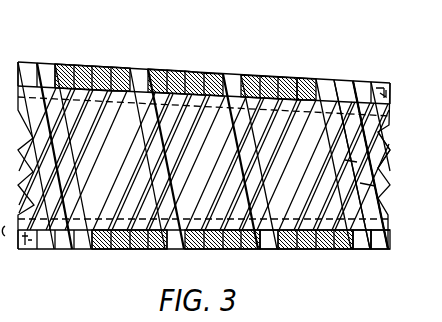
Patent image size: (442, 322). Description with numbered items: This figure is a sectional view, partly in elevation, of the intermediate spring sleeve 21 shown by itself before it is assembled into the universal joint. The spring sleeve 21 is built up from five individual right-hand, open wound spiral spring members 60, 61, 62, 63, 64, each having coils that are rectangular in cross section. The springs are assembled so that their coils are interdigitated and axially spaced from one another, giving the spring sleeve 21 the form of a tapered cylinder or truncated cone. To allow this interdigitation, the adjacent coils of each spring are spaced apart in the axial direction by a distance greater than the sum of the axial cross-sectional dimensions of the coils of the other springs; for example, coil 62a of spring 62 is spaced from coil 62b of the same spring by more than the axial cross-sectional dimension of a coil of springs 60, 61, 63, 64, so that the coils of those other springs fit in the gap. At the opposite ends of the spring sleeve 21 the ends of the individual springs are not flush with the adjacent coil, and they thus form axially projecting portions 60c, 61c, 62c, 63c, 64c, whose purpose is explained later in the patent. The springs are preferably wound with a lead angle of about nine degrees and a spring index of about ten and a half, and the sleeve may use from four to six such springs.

The intermediate spring sleeve 21 is at (170, 56).
The spiral spring member 60 is at (377, 81).
The spiral spring member 61 is at (361, 81).
The spiral spring member 62 is at (337, 80).
The spiral spring member 63 is at (317, 79).
The spiral spring member 64 is at (303, 77).
The axially projecting portion 60c is at (384, 138).
The axially projecting portion 61c is at (355, 163).
The axially projecting portion 63c is at (372, 185).
The axially projecting portion 64c is at (383, 150).
The coil 62a is at (357, 252).
The coil 62b is at (267, 251).
The axially projecting portion 62c is at (379, 251).